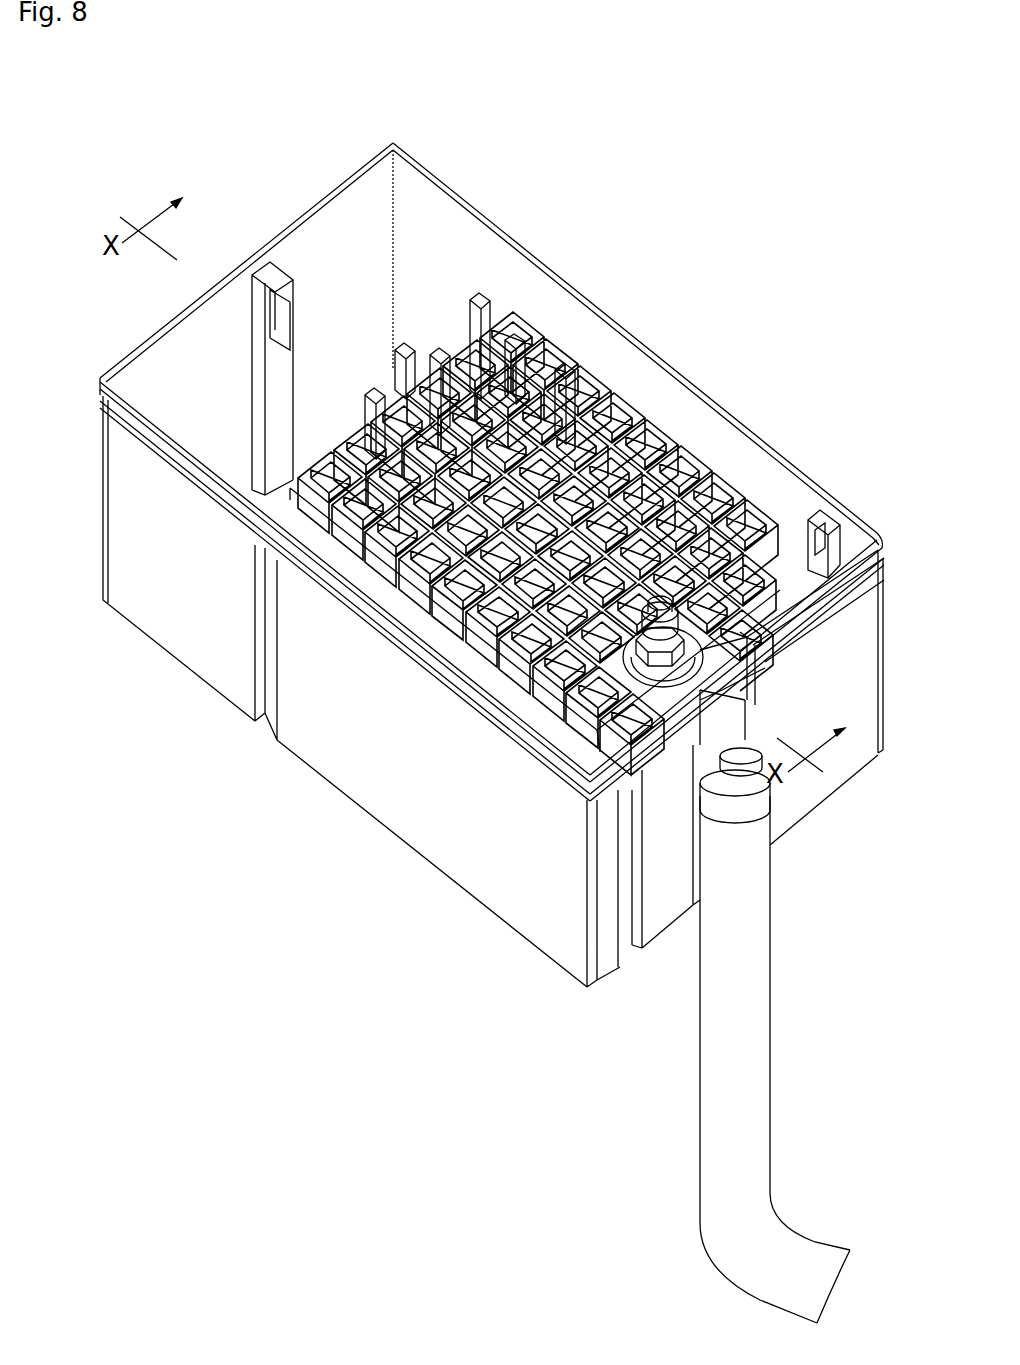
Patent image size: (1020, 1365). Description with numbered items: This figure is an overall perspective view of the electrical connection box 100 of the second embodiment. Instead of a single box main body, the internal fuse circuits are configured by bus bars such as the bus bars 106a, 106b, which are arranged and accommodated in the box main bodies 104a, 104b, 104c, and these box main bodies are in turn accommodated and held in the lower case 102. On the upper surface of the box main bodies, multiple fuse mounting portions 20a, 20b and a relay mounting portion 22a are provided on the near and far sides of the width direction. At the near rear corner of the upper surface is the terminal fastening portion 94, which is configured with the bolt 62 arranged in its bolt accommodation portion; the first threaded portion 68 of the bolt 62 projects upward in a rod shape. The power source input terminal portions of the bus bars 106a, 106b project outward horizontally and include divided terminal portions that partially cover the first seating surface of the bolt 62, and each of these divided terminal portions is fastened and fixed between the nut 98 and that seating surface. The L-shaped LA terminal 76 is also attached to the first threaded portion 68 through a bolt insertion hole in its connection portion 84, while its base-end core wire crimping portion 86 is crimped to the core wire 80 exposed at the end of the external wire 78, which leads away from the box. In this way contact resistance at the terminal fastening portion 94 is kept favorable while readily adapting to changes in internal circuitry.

The electrical connection box 100 is at (580, 112).
The lower case 102 is at (805, 428).
The fuse mounting portion 20a is at (305, 452).
The fuse mounting portion 20b is at (492, 650).
The relay mounting portion 22a is at (382, 350).
The box main body 104a is at (322, 432).
The box main body 104b is at (372, 357).
The box main body 104c is at (622, 422).
The bus bar 106a is at (590, 712).
The bus bar 106b is at (480, 598).
The bolt 62 is at (665, 588).
The first threaded portion 68 is at (715, 628).
The LA terminal 76 is at (755, 673).
The external wire 78 is at (757, 835).
The core wire 80 is at (735, 760).
The connection portion 84 is at (705, 655).
The core wire crimping portion 86 is at (768, 792).
The terminal fastening portion 94 is at (760, 614).
The nut 98 is at (705, 692).